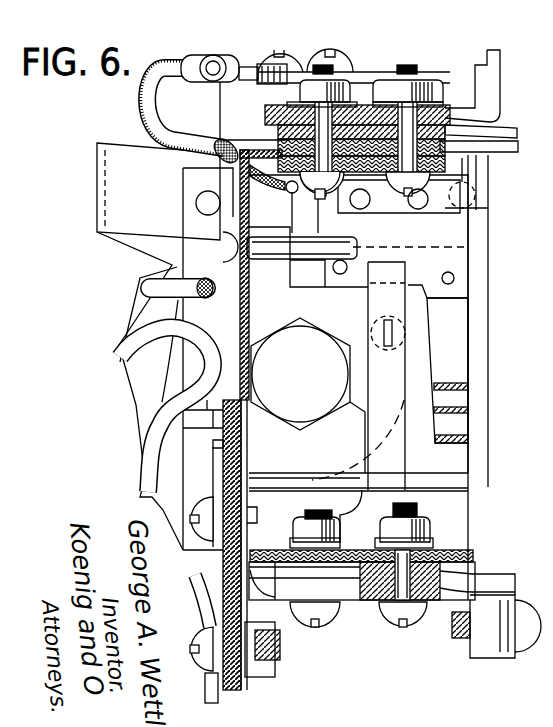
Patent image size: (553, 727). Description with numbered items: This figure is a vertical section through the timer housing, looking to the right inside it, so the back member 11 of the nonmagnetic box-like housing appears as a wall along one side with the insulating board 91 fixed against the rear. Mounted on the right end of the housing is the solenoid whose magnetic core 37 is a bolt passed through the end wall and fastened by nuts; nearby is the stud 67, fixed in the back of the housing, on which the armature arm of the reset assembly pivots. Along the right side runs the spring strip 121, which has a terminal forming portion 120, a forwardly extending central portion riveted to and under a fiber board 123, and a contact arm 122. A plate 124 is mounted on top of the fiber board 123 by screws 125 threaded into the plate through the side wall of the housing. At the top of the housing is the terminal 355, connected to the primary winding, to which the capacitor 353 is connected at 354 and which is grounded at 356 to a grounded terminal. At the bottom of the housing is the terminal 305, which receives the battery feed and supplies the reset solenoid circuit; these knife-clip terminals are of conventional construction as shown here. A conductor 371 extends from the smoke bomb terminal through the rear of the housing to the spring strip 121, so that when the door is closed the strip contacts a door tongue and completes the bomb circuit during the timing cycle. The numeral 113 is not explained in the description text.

The back member 11 is at (240, 296).
The magnetic core 37 is at (308, 395).
The stud 67 is at (258, 256).
The insulating board 91 is at (218, 445).
The plate 113 is at (330, 460).
The terminal forming portion 120 is at (300, 199).
The spring strip 121 is at (470, 310).
The contact arm 122 is at (458, 346).
The fiber board 123 is at (464, 238).
The plate 124 is at (488, 210).
The screws 125 is at (362, 205).
The terminal 305 is at (502, 655).
The capacitor 353 is at (452, 78).
The capacitor connection 354 is at (262, 66).
The terminal 355 is at (355, 80).
The ground connection 356 is at (334, 78).
The conductor 371 is at (273, 188).